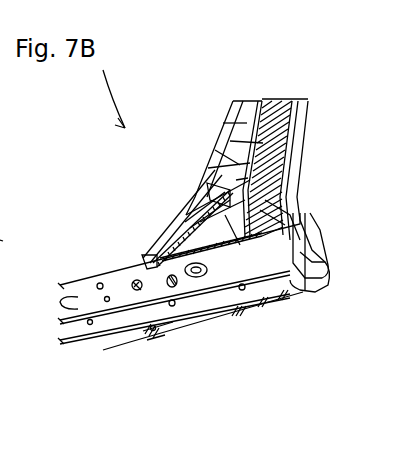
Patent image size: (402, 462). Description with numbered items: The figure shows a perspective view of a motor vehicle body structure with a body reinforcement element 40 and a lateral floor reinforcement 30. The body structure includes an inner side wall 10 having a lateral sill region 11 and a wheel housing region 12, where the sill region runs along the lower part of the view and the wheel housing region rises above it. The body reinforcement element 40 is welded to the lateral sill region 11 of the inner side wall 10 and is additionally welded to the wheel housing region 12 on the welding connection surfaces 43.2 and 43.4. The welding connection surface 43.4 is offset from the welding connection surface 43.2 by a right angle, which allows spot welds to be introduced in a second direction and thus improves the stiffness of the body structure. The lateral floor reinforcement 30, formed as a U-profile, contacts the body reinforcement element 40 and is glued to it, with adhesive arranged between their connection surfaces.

The inner side wall 10 is at (168, 168).
The lateral sill region 11 is at (123, 260).
The wheel housing region 12 is at (280, 178).
The lateral floor reinforcement 30 is at (128, 319).
The body reinforcement element 40 is at (278, 200).
The welding connection surface 43.2 is at (305, 230).
The welding connection surface 43.4 is at (317, 283).